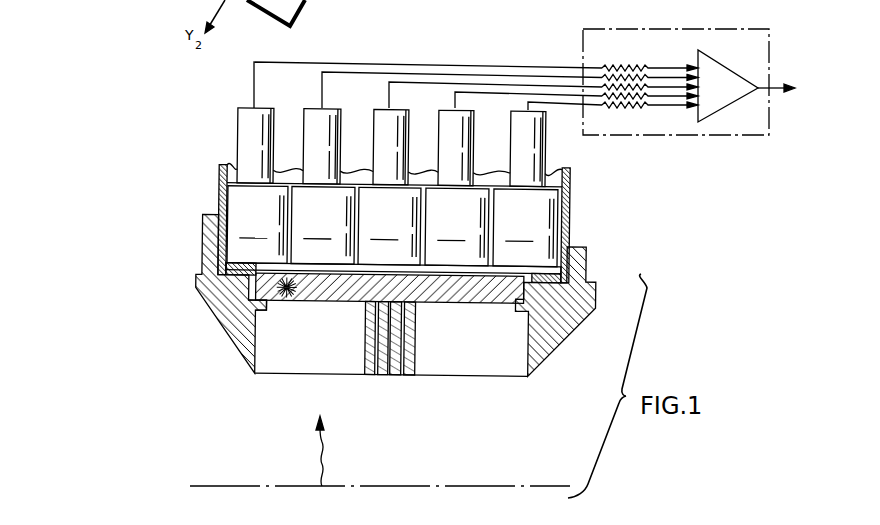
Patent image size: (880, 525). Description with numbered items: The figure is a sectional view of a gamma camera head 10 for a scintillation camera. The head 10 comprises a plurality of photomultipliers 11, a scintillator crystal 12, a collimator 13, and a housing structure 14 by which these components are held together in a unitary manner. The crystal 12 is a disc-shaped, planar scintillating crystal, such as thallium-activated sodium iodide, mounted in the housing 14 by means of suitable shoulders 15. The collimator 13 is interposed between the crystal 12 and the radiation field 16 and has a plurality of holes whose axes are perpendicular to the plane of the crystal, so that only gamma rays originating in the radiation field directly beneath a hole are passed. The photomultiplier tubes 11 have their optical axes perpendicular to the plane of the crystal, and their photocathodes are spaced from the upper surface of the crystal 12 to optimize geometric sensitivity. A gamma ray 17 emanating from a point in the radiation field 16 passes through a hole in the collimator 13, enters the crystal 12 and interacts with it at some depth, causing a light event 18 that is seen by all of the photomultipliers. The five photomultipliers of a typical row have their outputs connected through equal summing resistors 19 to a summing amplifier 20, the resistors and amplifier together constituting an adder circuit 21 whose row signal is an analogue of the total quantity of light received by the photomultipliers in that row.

The head 10 is at (592, 230).
The photomultipliers 11 is at (228, 147).
The scintillator crystal 12 is at (453, 297).
The collimator 13 is at (368, 360).
The housing structure 14 is at (218, 196).
The shoulders 15 is at (265, 306).
The radiation field 16 is at (441, 486).
The gamma ray 17 is at (318, 450).
The light event 18 is at (288, 300).
The summing resistors 19 is at (630, 104).
The summing amplifier 20 is at (712, 113).
The adder circuit 21 is at (636, 29).